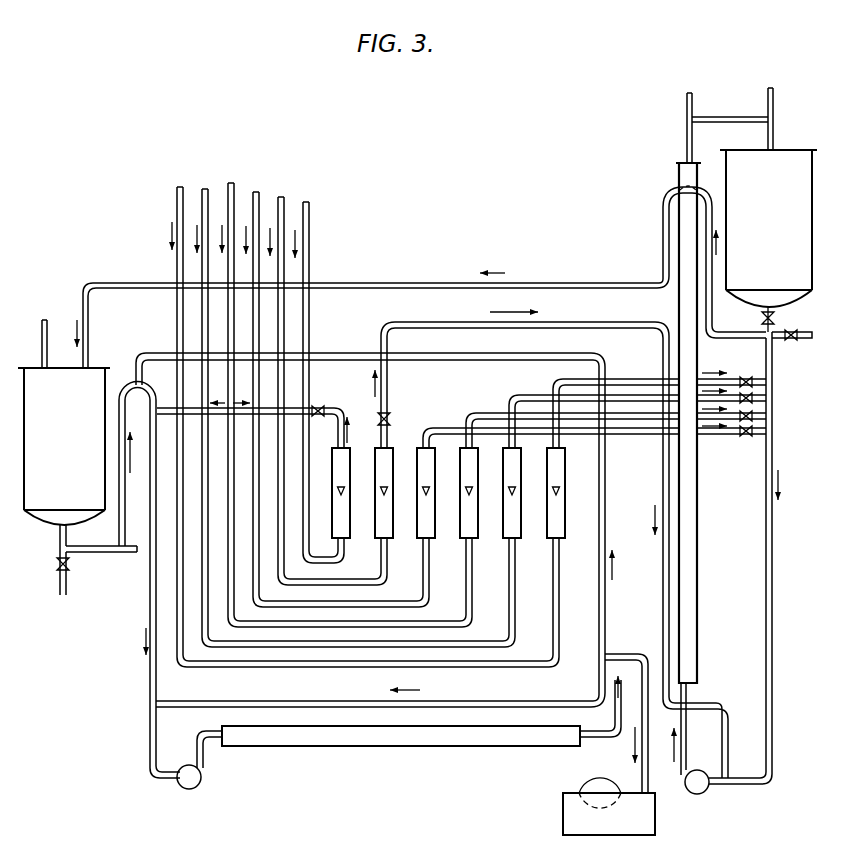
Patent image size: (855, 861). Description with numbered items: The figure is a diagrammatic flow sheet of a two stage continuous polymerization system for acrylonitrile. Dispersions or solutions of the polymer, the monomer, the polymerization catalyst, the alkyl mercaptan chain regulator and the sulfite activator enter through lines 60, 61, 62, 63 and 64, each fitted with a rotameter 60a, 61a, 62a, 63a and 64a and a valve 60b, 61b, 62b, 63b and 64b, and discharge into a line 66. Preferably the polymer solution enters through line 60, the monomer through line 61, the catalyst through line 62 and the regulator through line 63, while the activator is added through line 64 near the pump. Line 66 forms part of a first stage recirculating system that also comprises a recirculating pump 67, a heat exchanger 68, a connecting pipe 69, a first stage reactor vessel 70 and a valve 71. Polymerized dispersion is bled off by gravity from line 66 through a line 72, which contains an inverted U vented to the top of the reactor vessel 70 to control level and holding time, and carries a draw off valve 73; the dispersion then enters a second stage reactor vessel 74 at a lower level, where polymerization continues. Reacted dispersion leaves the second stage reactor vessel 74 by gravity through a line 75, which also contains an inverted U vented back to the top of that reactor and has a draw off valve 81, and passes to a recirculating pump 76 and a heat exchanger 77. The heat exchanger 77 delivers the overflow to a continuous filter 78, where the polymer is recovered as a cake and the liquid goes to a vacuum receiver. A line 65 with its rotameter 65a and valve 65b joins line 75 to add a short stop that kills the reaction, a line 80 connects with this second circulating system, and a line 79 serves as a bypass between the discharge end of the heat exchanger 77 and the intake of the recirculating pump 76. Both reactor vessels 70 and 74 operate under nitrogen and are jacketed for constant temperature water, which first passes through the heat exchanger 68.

The line 60 is at (178, 186).
The line 61 is at (204, 189).
The line 62 is at (232, 184).
The line 63 is at (258, 192).
The line 64 is at (284, 197).
The line 65 is at (310, 208).
The rotameter 60a is at (553, 545).
The rotameter 61a is at (509, 540).
The rotameter 62a is at (466, 540).
The rotameter 63a is at (424, 532).
The rotameter 64a is at (381, 528).
The rotameter 65a is at (340, 532).
The valve 60b is at (746, 379).
The valve 61b is at (752, 397).
The valve 62b is at (752, 414).
The valve 63b is at (752, 430).
The valve 64b is at (386, 412).
The valve 65b is at (318, 409).
The line 66 is at (773, 543).
The recirculating pump 67 is at (694, 795).
The heat exchanger 68 is at (698, 546).
The connecting pipe 69 is at (712, 117).
The first stage reactor vessel 70 is at (786, 156).
The valve 71 is at (763, 318).
The line 72 is at (663, 242).
The draw off valve 73 is at (793, 333).
The second stage reactor vessel 74 is at (94, 366).
The line 75 is at (125, 512).
The recirculating pump 76 is at (188, 789).
The heat exchanger 77 is at (352, 746).
The continuous filter 78 is at (566, 812).
The line 79 is at (253, 694).
The line 80 is at (606, 510).
The draw off valve 81 is at (58, 567).